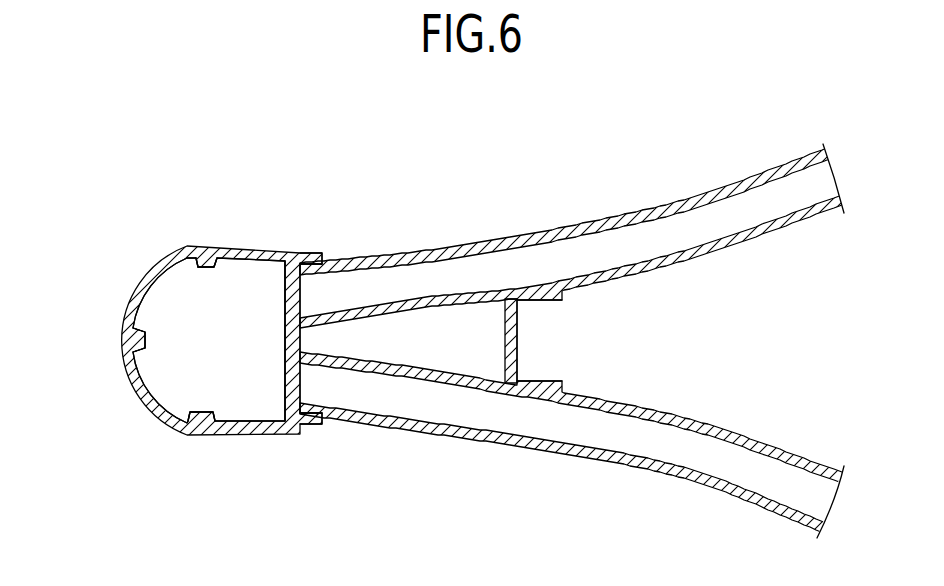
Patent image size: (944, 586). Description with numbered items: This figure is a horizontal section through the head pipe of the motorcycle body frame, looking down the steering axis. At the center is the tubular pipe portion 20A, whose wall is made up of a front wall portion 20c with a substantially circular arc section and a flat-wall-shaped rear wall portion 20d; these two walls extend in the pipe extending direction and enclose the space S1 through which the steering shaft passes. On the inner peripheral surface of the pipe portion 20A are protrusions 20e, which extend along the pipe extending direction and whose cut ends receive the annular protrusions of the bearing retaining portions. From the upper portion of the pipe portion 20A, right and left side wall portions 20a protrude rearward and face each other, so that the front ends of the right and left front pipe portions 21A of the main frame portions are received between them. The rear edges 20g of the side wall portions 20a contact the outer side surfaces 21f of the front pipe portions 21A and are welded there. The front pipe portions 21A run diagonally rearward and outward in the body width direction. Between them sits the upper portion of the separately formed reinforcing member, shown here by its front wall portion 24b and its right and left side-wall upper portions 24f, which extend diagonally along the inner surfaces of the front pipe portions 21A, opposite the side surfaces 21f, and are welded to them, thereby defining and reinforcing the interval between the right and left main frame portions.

The pipe portion 20A is at (130, 420).
The side wall portion 20a is at (313, 253).
The front wall portion 20c is at (130, 384).
The rear wall portion 20d is at (287, 331).
The protrusion 20e is at (190, 268).
The rear edge 20g is at (322, 262).
The front pipe portion 21A is at (572, 345).
The side surface 21f is at (413, 252).
The front wall portion 24b is at (505, 336).
The side-wall upper portion 24f is at (558, 382).
The space S1 is at (234, 349).